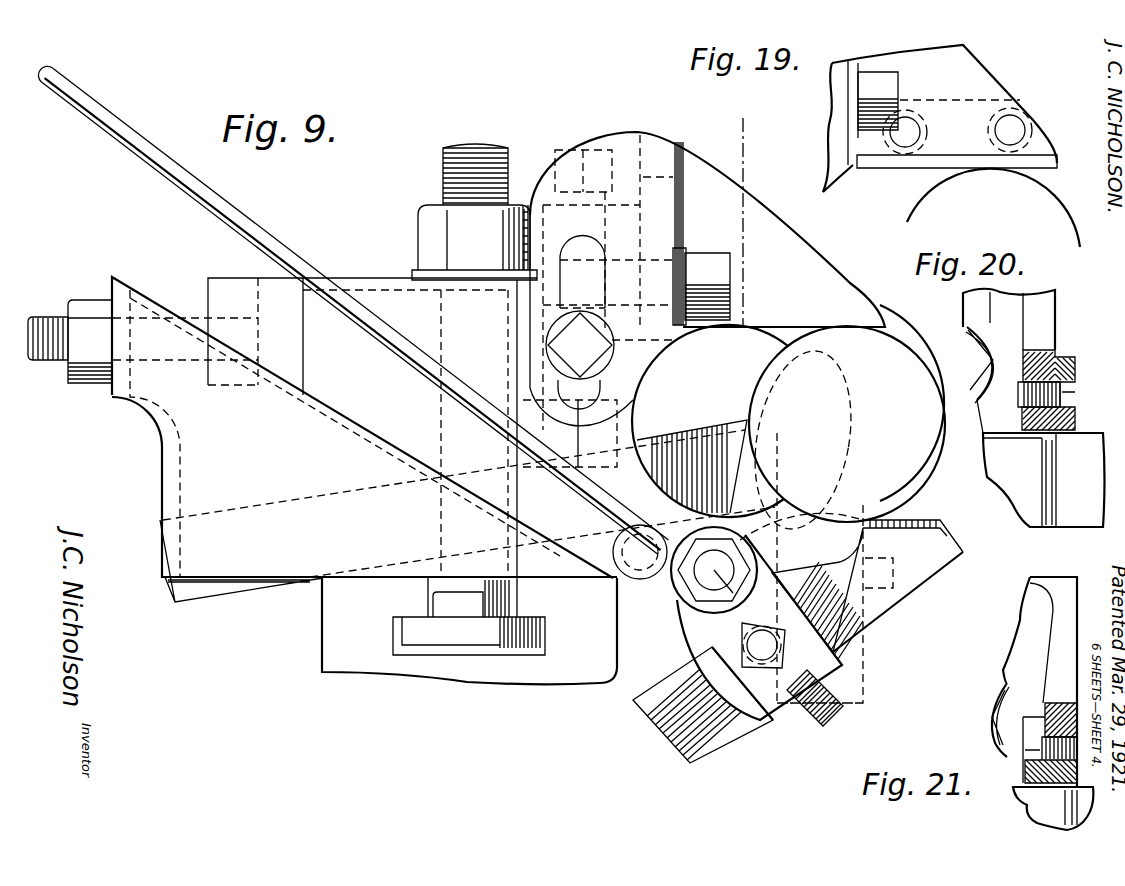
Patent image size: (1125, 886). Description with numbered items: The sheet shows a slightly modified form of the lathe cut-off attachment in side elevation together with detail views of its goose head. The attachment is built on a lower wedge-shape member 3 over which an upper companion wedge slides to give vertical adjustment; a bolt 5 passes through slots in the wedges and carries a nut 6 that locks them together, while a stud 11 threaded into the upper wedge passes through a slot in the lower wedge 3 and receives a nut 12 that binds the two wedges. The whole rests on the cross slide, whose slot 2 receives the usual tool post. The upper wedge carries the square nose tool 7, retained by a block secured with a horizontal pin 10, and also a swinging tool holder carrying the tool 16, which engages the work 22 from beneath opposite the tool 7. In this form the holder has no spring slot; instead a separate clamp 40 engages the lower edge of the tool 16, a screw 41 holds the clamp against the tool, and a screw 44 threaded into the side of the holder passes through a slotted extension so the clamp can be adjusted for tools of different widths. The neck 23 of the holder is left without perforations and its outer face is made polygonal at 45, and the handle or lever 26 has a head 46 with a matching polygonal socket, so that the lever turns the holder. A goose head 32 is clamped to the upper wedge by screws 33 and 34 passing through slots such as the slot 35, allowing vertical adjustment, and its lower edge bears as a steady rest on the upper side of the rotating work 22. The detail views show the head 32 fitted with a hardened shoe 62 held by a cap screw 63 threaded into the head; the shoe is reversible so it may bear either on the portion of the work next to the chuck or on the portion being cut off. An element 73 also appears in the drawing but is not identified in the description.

In FIG. 9, the slot 2 is at (420, 650).
In FIG. 9, the lower wedge-shape member 3 is at (175, 462).
In FIG. 9, the bolt 5 is at (480, 147).
In FIG. 9, the nut 6 is at (474, 242).
In FIG. 9, the square nose tool 7 is at (686, 432).
In FIG. 9, the horizontal pin 10 is at (817, 747).
In FIG. 9, the stud 11 is at (28, 358).
In FIG. 9, the nut 12 is at (80, 375).
In FIG. 9, the tool 16 is at (885, 616).
In FIG. 20, the work 22 is at (1052, 462).
In FIG. 21, the work 22 is at (1087, 800).
In FIG. 9, the neck 23 is at (697, 600).
In FIG. 9, the handle or lever 26 is at (248, 222).
In FIG. 9, the goose head 32 is at (817, 250).
In FIG. 19, the goose head 32 is at (1000, 90).
In FIG. 20, the goose head 32 is at (1048, 322).
In FIG. 21, the goose head 32 is at (1060, 638).
In FIG. 9, the screw 33 is at (590, 334).
In FIG. 9, the screw 34 is at (722, 283).
In FIG. 19, the screw 34 is at (898, 96).
In FIG. 20, the screw 34 is at (973, 360).
In FIG. 21, the screw 34 is at (1001, 717).
In FIG. 9, the slot 35 is at (606, 279).
In FIG. 9, the clamp 40 is at (857, 667).
In FIG. 9, the screw 41 is at (797, 710).
In FIG. 9, the screw 44 is at (694, 715).
In FIG. 9, the polygonal faces 45 is at (700, 625).
In FIG. 9, the head 46 is at (620, 598).
In FIG. 20, the shoe 62 is at (1070, 362).
In FIG. 21, the shoe 62 is at (1044, 705).
In FIG. 20, the cap screw 63 is at (1068, 398).
In FIG. 21, the cap screw 63 is at (1037, 757).
In FIG. 9, the bolt 73 is at (492, 638).